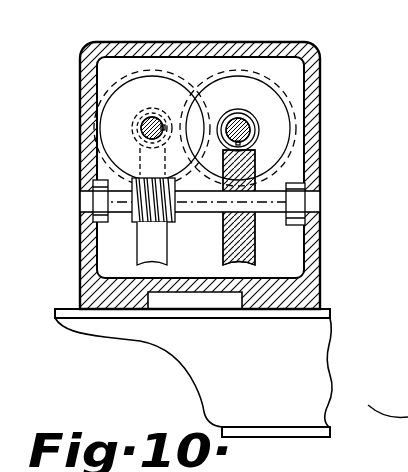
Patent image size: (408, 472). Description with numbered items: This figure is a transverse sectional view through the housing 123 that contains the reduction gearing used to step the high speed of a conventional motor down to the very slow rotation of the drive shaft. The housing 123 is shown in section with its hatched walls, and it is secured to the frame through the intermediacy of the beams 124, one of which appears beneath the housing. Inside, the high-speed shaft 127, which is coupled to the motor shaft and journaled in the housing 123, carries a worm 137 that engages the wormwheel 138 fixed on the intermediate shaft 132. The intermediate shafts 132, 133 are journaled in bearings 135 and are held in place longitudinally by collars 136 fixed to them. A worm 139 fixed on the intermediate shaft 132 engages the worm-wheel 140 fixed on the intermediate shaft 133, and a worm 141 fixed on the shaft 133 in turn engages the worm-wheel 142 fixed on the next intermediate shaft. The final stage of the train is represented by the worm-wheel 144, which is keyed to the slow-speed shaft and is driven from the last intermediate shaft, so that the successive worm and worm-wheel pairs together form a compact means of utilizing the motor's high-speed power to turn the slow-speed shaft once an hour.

The housing 123 is at (281, 37).
The beams 124 is at (193, 373).
The high-speed shaft 127 is at (252, 131).
The intermediate shaft 132 is at (268, 213).
The intermediate shaft 133 is at (141, 127).
The bearings 135 is at (93, 192).
The collars 136 is at (98, 223).
The worm 137 is at (256, 121).
The wormwheel 138 is at (251, 263).
The worm 139 is at (170, 221).
The worm-wheel 140 is at (152, 128).
The worm 141 is at (138, 118).
The worm-wheel 142 is at (150, 261).
The worm-wheel 144 is at (238, 128).